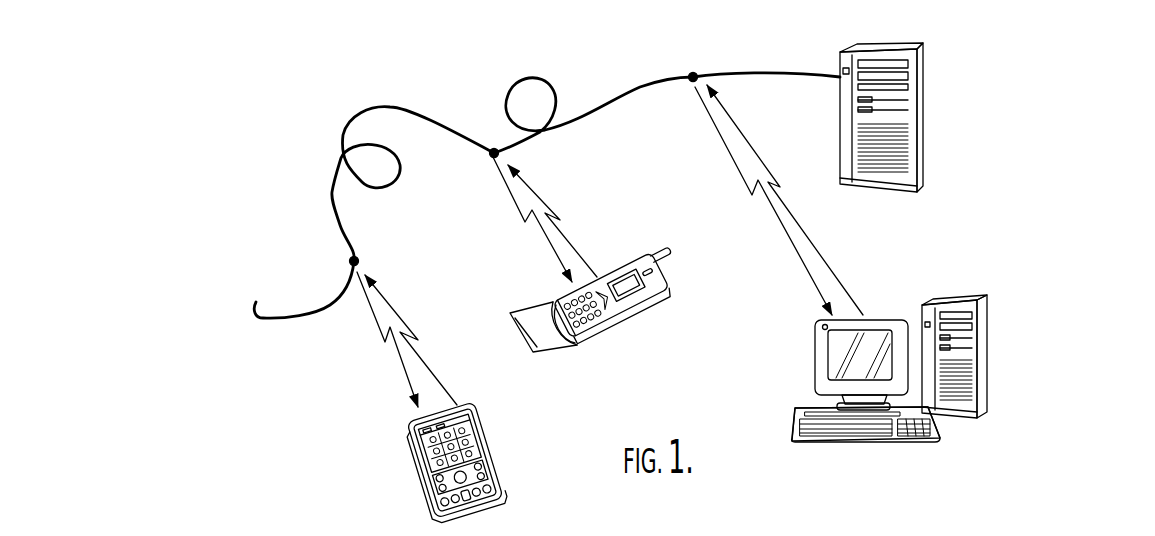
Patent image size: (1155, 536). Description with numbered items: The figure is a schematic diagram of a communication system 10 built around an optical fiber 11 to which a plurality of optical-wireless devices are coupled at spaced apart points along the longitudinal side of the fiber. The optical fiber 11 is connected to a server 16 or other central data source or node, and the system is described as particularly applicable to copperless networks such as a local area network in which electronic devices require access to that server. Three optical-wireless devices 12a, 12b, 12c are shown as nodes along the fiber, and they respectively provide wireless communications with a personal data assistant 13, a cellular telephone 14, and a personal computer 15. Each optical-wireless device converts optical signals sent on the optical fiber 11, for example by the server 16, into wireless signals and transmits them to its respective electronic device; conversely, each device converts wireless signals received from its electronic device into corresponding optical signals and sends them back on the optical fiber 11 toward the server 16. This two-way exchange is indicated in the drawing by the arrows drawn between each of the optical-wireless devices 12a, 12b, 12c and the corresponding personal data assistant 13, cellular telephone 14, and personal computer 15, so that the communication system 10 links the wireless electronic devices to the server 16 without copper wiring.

The communication system 10 is at (1006, 116).
The optical fiber 11 is at (642, 87).
The optical-wireless device 12a is at (351, 262).
The optical-wireless device 12b is at (492, 151).
The optical-wireless device 12c is at (694, 75).
The personal data assistant 13 is at (484, 443).
The cellular telephone 14 is at (664, 270).
The personal computer 15 is at (985, 332).
The server 16 is at (921, 75).